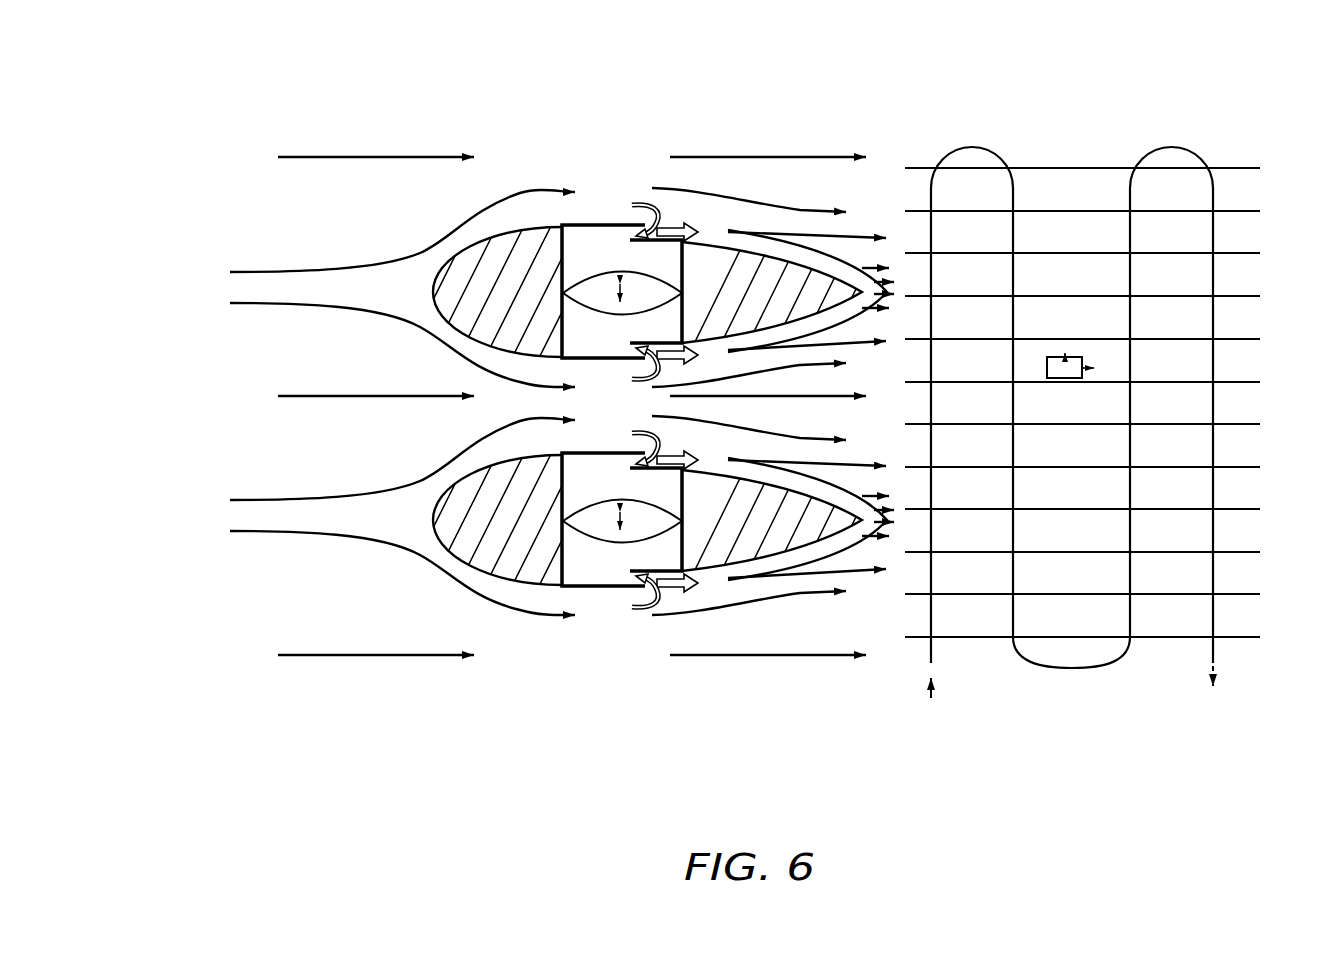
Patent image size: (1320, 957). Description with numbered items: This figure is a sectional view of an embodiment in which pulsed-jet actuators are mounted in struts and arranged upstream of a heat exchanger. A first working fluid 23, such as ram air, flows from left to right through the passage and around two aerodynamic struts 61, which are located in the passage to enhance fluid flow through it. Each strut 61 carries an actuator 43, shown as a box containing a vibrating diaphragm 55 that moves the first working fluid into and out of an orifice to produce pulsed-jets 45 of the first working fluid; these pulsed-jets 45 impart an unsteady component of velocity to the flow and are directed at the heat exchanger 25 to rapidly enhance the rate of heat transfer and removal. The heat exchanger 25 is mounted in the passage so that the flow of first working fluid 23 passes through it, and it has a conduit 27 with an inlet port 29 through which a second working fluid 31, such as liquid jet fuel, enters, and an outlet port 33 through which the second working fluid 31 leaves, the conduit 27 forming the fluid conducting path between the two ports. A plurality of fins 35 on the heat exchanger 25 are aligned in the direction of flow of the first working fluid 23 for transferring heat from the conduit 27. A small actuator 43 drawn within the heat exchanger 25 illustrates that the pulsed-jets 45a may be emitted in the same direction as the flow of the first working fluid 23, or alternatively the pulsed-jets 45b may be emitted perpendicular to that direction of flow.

The first working fluid 23 is at (323, 397).
The heat exchanger 25 is at (1074, 390).
The conduit 27 is at (1072, 669).
The inlet port 29 is at (928, 657).
The second working fluid 31 is at (928, 690).
The outlet port 33 is at (1216, 650).
The fins 35 is at (1228, 167).
The actuator 43 is at (562, 359).
The pulsed-jets 45 is at (678, 224).
The pulsed-jets emitted in same direction as flow 45a is at (1102, 364).
The pulsed-jets emitted perpendicular to flow 45b is at (1069, 355).
The vibrating diaphragm 55 is at (620, 271).
The struts 61 is at (470, 243).